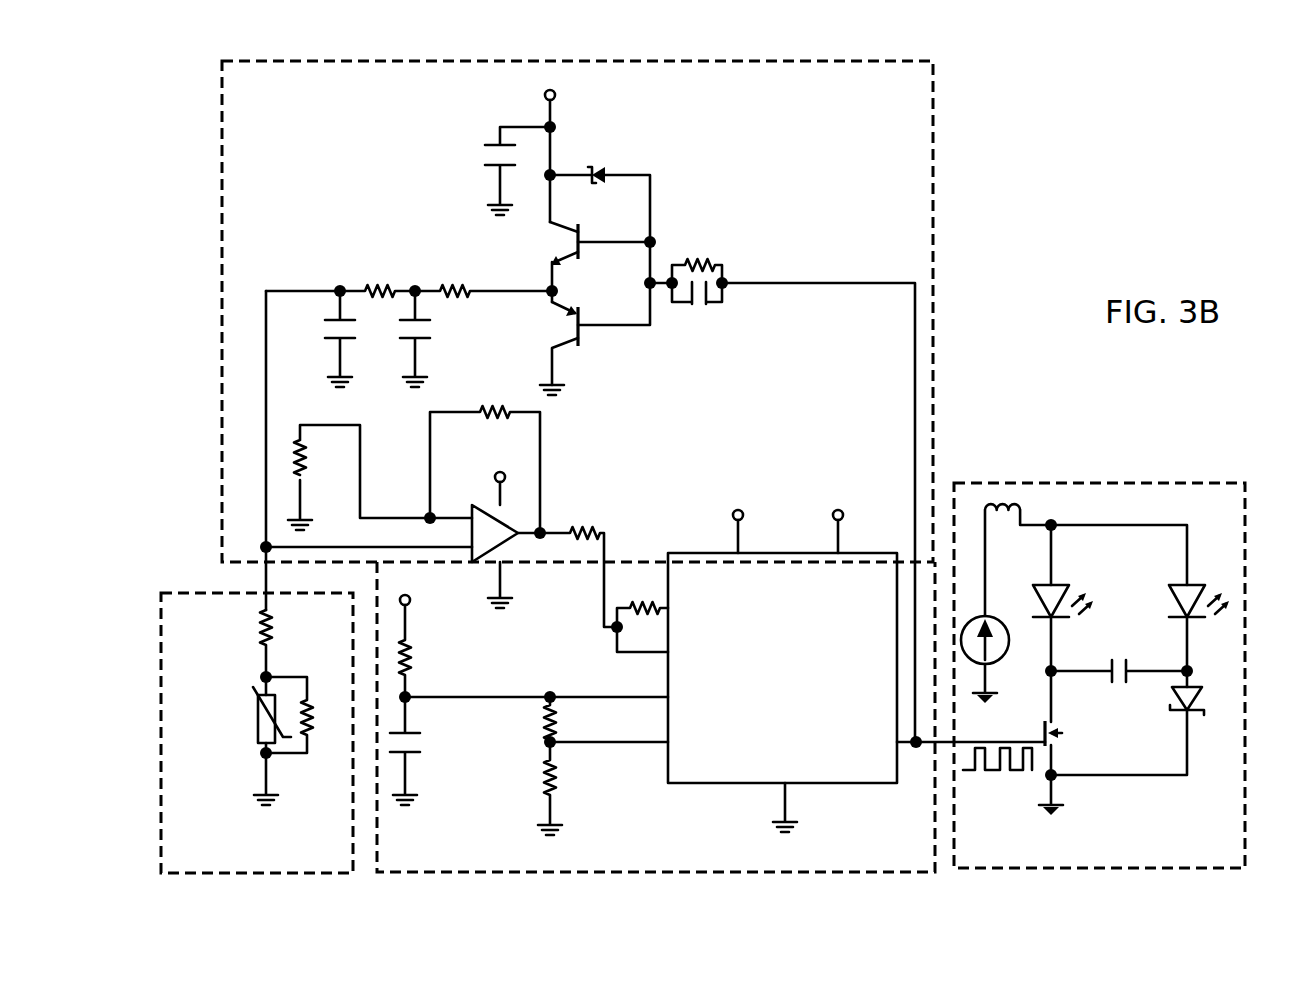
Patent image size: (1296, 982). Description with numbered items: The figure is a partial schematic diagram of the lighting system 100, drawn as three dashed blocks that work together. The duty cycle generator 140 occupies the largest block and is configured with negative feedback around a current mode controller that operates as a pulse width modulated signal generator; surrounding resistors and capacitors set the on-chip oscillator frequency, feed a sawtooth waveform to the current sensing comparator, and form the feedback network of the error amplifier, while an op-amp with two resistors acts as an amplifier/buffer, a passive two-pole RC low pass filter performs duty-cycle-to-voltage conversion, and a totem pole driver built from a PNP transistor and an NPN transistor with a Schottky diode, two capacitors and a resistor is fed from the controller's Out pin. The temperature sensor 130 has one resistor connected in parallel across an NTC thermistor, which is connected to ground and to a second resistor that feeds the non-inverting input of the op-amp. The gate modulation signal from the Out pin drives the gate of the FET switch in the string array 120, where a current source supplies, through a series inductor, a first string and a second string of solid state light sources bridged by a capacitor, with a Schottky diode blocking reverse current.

The lighting system 100 is at (1044, 236).
The string array 120 is at (1106, 848).
The temperature sensor 130 is at (212, 841).
The duty cycle generator 140 is at (796, 88).